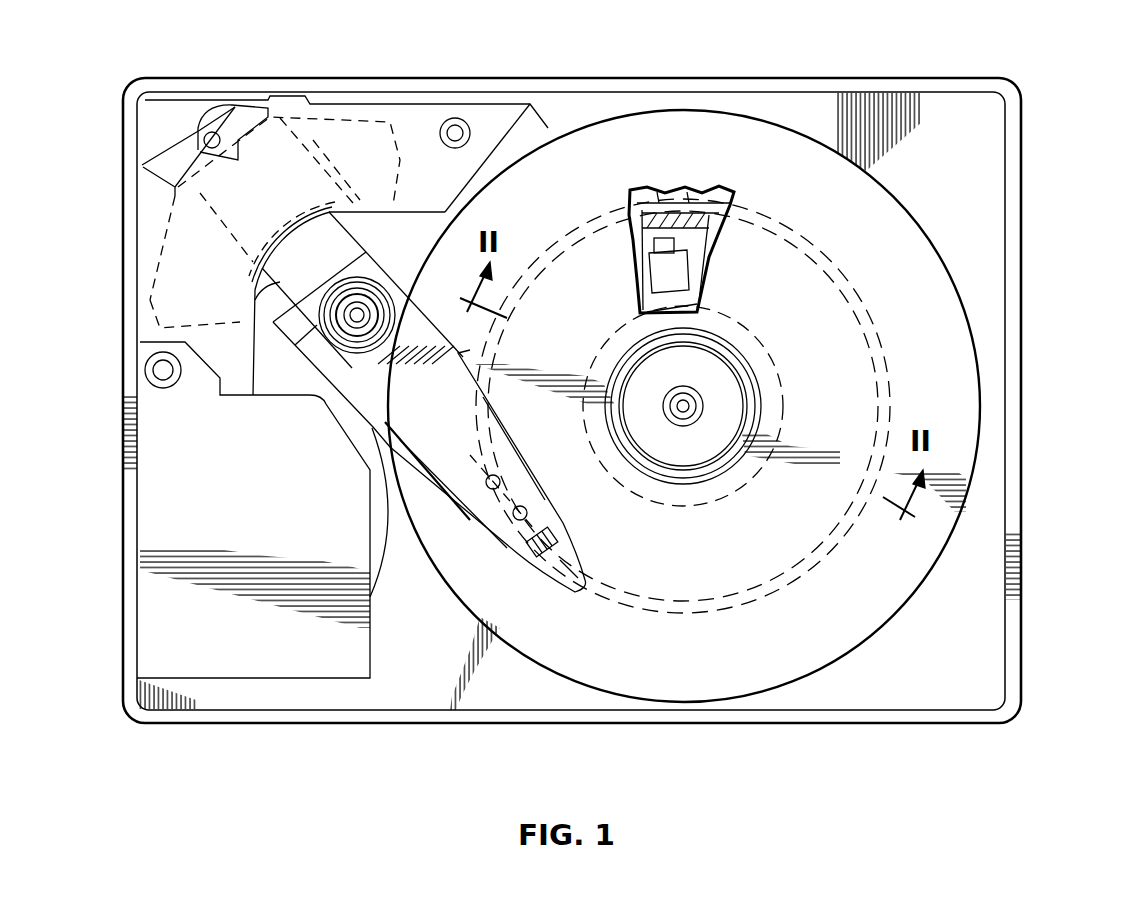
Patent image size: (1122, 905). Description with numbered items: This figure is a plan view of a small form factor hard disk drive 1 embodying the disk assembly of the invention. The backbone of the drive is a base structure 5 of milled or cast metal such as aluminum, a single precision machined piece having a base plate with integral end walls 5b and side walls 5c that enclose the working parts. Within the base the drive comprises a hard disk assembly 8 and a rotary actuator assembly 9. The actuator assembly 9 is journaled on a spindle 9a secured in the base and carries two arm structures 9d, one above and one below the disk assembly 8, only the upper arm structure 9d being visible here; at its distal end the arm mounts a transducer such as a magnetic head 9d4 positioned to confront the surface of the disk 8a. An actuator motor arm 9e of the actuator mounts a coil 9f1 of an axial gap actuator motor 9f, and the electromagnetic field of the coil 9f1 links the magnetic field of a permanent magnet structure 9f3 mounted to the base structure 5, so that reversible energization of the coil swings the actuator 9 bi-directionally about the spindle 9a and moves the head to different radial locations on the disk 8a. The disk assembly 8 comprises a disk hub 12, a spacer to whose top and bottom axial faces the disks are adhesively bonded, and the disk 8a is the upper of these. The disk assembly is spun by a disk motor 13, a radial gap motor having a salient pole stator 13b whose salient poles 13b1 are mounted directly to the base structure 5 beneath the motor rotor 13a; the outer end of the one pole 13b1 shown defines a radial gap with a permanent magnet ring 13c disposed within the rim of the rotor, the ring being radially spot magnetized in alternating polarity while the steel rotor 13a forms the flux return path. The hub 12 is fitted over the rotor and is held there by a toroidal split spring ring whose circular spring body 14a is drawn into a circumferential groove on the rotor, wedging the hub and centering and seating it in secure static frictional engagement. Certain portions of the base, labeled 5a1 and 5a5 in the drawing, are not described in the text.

The hard disk drive 1 is at (980, 187).
The base structure 5 is at (1028, 626).
The base inner wall 5a1 is at (992, 520).
The spindle 5a5 is at (692, 404).
The end wall 5b is at (122, 530).
The side wall 5c is at (808, 78).
The hard disk assembly 8 is at (946, 334).
The disk 8a is at (880, 225).
The rotary actuator assembly 9 is at (400, 235).
The spindle 9a is at (357, 325).
The arm structure 9d is at (545, 477).
The magnetic head 9d4 is at (562, 541).
The actuator motor arm 9e is at (300, 267).
The axial gap actuator motor 9f is at (408, 124).
The coil 9f1 is at (350, 140).
The permanent magnet structure 9f3 is at (148, 330).
The disk hub 12 is at (800, 441).
The disk motor 13 is at (702, 200).
The motor rotor 13a is at (656, 192).
The salient pole stator 13b is at (650, 282).
The salient pole 13b1 is at (647, 312).
The permanent magnet ring 13c is at (686, 193).
The circular spring body 14a is at (727, 358).